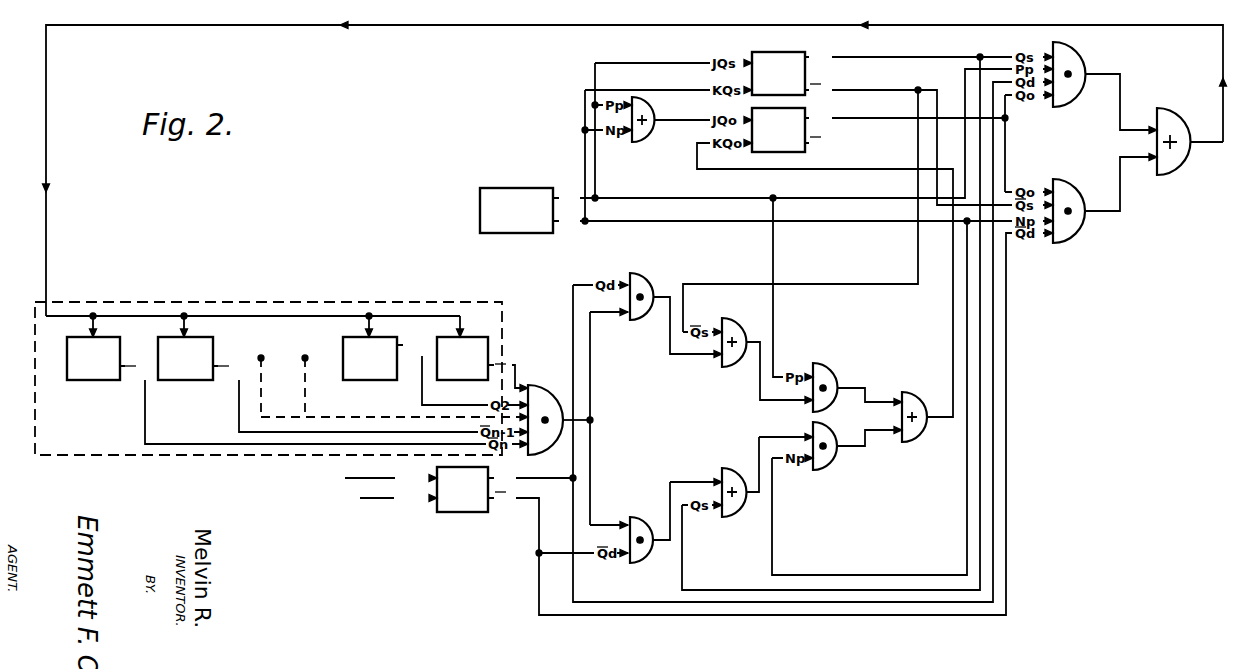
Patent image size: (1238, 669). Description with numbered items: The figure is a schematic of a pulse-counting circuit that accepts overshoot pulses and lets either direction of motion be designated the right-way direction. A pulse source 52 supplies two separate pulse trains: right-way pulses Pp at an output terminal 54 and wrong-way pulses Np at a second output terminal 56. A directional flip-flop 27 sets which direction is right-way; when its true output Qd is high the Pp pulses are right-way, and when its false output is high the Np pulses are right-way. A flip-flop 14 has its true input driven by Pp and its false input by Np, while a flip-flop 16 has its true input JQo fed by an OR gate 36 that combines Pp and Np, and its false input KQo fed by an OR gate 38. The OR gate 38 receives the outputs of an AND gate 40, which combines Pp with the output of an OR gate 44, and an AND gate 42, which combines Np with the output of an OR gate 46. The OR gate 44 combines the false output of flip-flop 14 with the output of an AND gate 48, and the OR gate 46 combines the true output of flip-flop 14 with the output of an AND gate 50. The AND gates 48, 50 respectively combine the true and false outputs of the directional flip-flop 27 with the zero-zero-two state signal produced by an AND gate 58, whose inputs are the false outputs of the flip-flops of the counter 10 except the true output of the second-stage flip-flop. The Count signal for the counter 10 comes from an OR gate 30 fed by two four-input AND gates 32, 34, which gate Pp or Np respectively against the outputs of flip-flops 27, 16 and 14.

The counter 10 is at (320, 302).
The flip-flop 14 is at (803, 56).
The flip-flop 16 is at (812, 151).
The directional flip-flop 27 is at (470, 512).
The OR gate 30 is at (1173, 122).
The AND gate 32 is at (1082, 60).
The AND gate 34 is at (1075, 194).
The OR gate 36 is at (655, 103).
The OR gate 38 is at (914, 400).
The AND gate 40 is at (833, 376).
The AND gate 42 is at (833, 460).
The OR gate 44 is at (738, 334).
The OR gate 46 is at (736, 510).
The AND gate 48 is at (648, 287).
The AND gate 50 is at (645, 560).
The pulse source 52 is at (510, 190).
The output terminal 54 is at (556, 196).
The output terminal 56 is at (556, 226).
The AND gate 58 is at (555, 452).